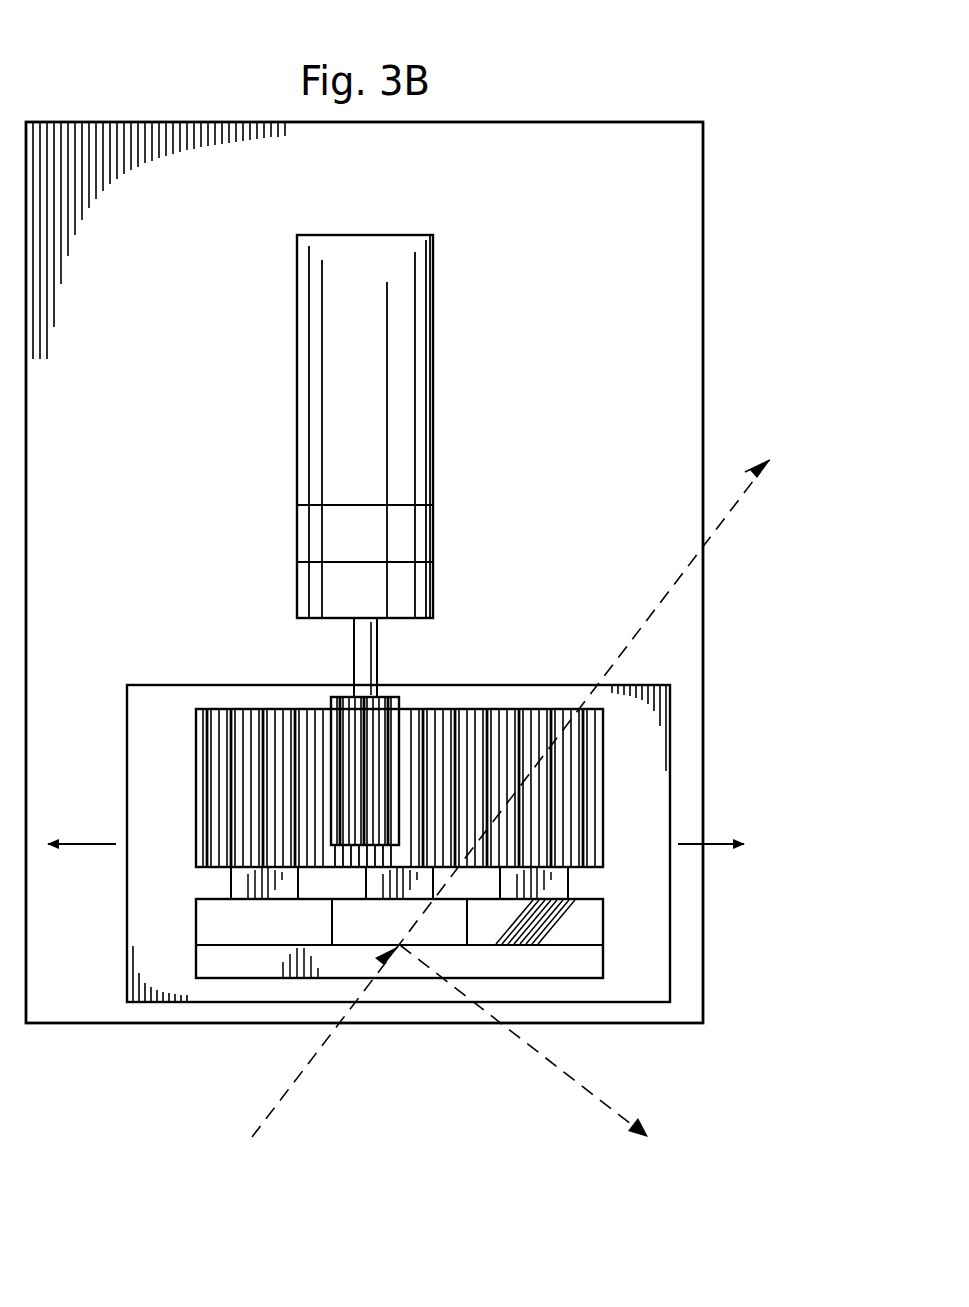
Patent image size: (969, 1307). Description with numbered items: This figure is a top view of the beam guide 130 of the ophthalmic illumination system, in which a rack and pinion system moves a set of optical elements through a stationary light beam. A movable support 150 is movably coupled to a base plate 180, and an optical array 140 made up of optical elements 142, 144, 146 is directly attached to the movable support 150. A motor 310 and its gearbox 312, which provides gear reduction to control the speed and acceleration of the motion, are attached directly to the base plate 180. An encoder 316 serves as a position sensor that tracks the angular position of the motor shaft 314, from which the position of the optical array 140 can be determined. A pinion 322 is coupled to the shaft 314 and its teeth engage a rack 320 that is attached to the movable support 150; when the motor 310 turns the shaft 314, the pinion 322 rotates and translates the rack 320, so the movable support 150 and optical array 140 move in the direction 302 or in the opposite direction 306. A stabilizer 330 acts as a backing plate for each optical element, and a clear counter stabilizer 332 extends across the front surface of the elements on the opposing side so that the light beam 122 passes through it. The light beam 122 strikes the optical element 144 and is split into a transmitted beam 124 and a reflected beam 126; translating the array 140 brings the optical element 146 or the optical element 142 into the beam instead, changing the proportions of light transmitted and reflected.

The beam guide 130 is at (118, 101).
The base plate 180 is at (590, 401).
The motor 310 is at (297, 362).
The gearbox 312 is at (297, 537).
The encoder 316 is at (297, 592).
The shaft 314 is at (356, 662).
The movable support 150 is at (166, 696).
The rack 320 is at (204, 785).
The pinion 322 is at (402, 727).
The stabilizer 330 is at (238, 877).
The optical array 140 is at (190, 922).
The optical element 142 is at (223, 937).
The optical element 144 is at (433, 935).
The optical element 146 is at (593, 923).
The counter stabilizer 332 is at (582, 972).
The direction 302 is at (150, 844).
The second direction of motion 306 is at (719, 844).
The light beam 122 is at (270, 1108).
The transmitted beam 124 is at (662, 602).
The reflected beam 126 is at (575, 1080).